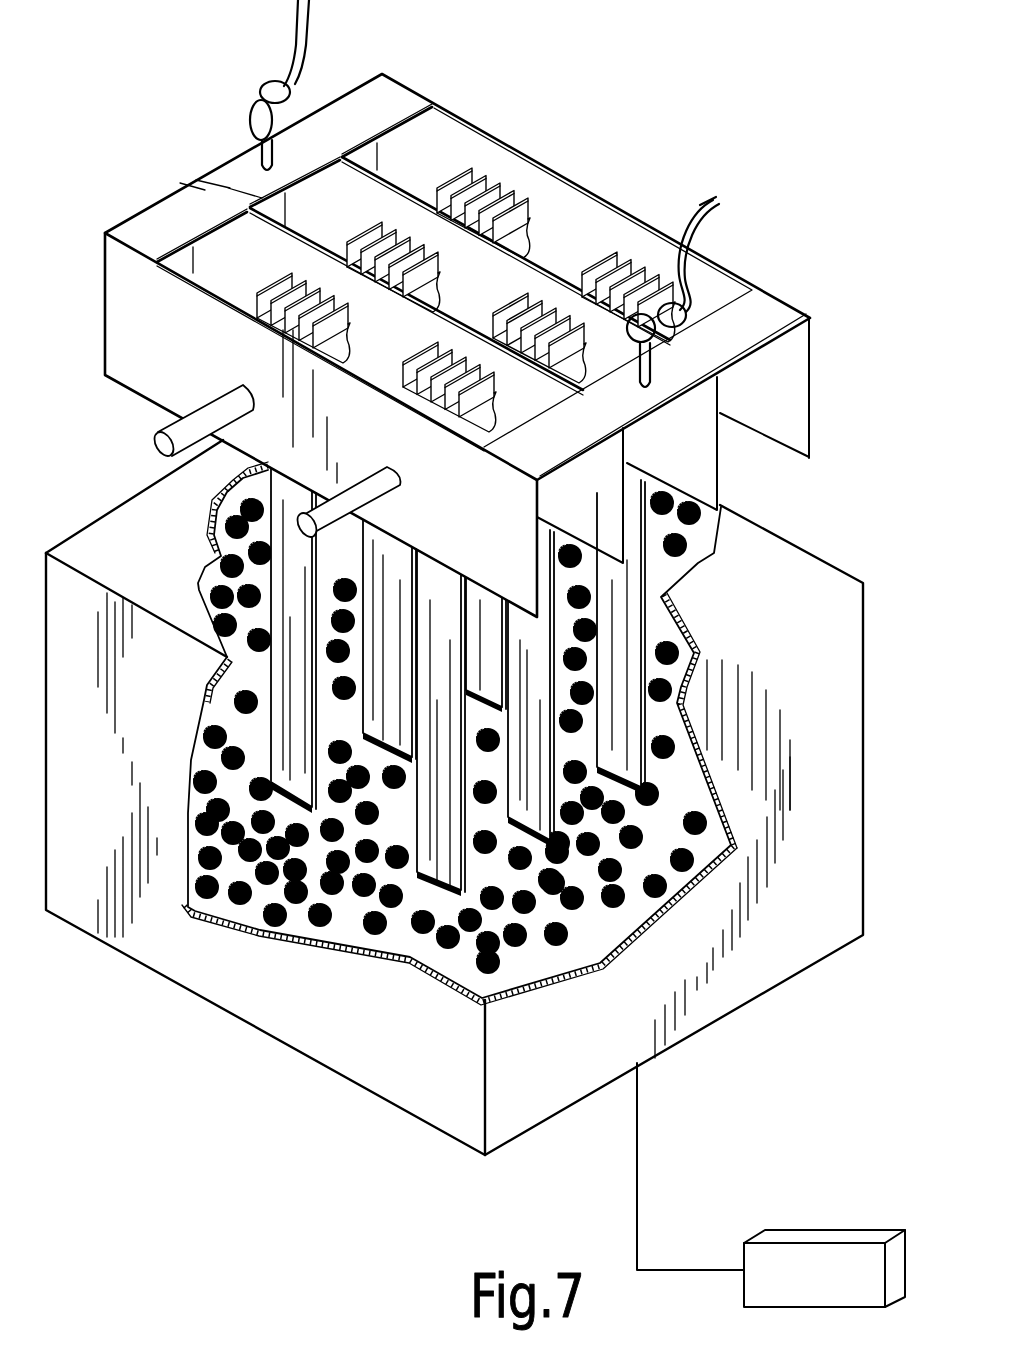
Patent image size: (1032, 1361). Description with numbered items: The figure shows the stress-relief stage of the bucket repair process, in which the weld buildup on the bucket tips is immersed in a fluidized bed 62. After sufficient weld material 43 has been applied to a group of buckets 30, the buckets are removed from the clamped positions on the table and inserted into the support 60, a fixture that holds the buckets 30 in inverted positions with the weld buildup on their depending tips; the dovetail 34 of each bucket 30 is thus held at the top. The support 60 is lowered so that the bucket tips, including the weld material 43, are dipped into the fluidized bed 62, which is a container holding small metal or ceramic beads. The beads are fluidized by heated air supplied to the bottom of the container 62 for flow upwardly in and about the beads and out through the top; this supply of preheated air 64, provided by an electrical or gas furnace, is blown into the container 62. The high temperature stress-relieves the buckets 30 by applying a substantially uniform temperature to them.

The bucket 30 is at (290, 596).
The dovetail 34 is at (503, 190).
The weld material 43 is at (288, 875).
The support 60 is at (155, 200).
The fluidized bed 62 is at (335, 1025).
The supply of preheated air 64 is at (778, 1235).